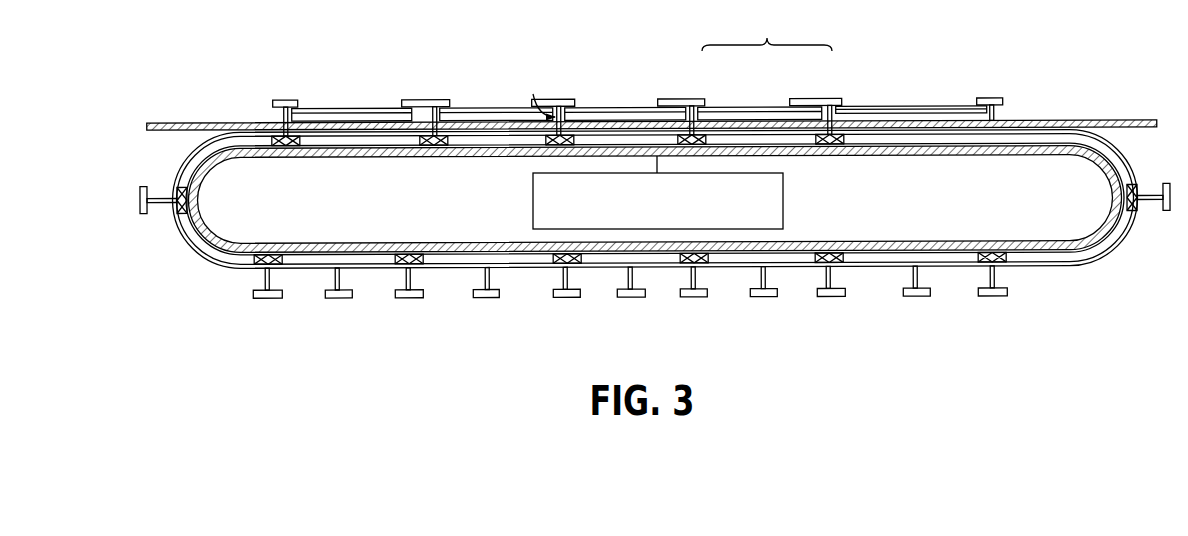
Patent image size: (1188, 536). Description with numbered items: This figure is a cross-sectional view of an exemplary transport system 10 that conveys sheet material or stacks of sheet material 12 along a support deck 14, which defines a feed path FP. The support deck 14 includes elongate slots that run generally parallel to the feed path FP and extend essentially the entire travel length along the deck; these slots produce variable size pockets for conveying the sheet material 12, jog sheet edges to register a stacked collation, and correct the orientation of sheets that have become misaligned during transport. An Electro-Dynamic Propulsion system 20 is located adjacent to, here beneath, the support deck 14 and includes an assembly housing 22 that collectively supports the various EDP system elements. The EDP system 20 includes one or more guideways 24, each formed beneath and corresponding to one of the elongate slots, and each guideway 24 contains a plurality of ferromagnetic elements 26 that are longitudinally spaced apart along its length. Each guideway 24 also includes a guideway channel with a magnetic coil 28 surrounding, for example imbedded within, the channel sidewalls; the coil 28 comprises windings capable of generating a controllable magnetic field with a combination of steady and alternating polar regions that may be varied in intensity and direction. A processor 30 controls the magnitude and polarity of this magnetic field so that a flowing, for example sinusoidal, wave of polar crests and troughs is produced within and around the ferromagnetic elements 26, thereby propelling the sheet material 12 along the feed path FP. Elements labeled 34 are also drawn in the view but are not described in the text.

The transport system 10 is at (903, 130).
The sheet material 12 is at (344, 106).
The support deck 14 is at (1020, 118).
The Electro-Dynamic Propulsion system 20 is at (767, 30).
The assembly housing 22 is at (779, 128).
The guideway 24 is at (751, 134).
The ferromagnetic element 26 is at (292, 135).
The magnetic coil 28 is at (726, 146).
The processor 30 is at (540, 195).
The carrier tray 34 is at (284, 99).
The feed path FP is at (536, 96).